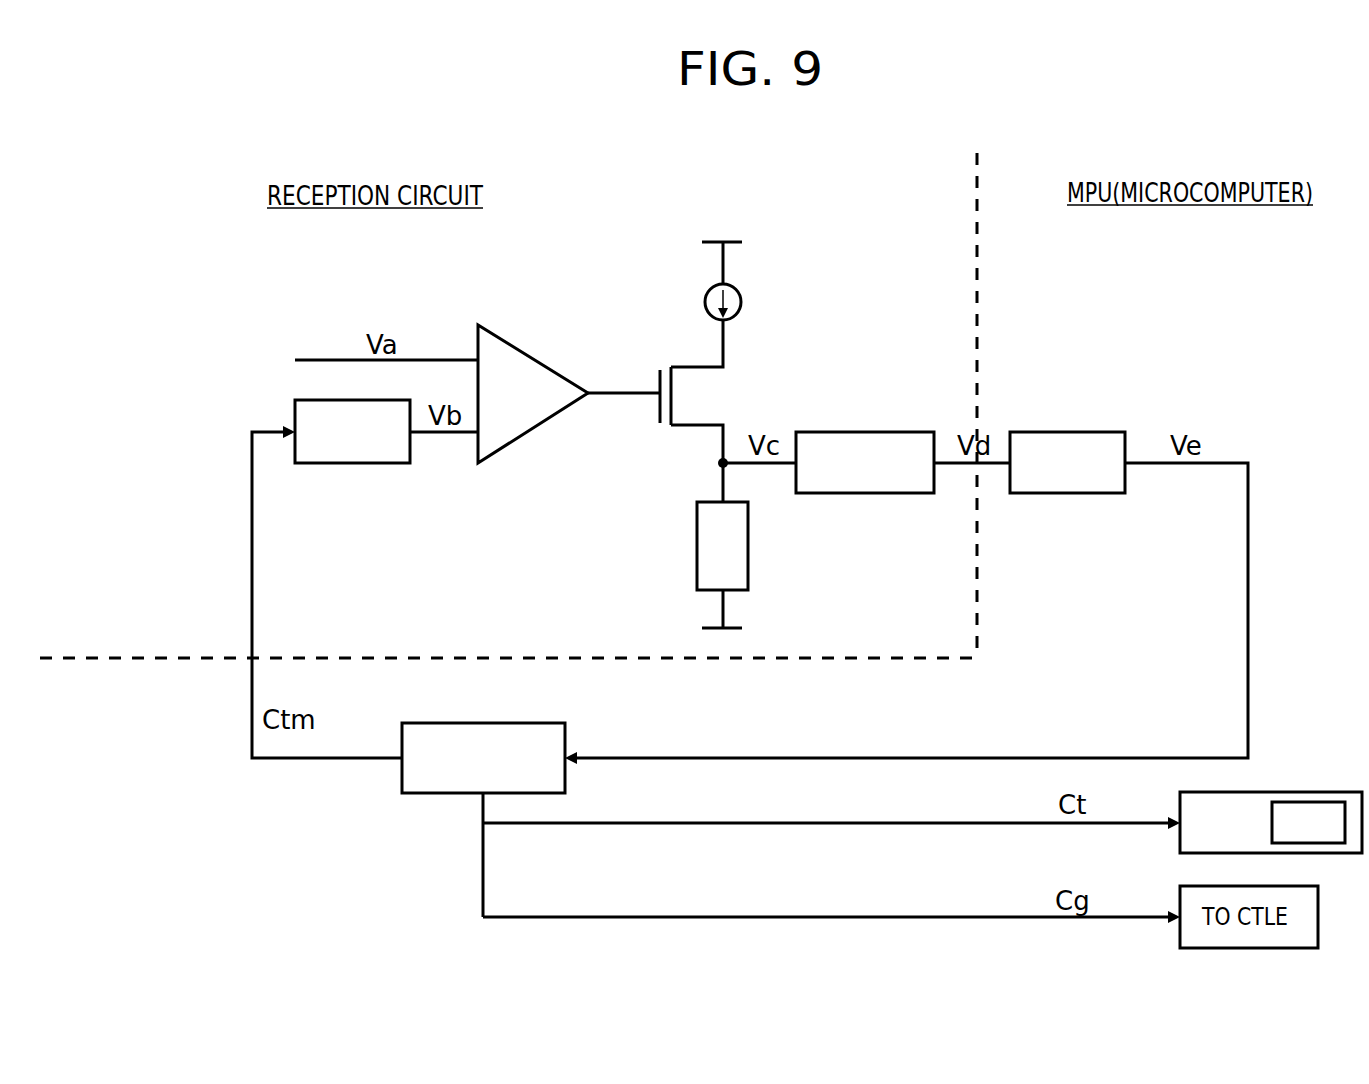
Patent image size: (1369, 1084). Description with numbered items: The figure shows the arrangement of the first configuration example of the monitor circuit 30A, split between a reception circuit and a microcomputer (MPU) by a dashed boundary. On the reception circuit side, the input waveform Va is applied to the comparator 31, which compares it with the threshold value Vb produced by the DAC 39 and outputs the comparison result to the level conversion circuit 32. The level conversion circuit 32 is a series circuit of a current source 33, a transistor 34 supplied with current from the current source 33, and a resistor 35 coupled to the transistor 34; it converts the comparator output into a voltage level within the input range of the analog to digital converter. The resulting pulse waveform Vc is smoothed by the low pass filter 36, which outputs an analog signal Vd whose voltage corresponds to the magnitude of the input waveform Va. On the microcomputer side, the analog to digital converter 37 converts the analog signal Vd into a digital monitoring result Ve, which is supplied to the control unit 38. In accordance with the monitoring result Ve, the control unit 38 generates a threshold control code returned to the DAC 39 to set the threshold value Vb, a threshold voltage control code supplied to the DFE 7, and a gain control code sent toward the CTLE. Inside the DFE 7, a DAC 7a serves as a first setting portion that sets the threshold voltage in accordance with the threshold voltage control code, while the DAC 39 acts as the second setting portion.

The monitor circuit 30A is at (146, 272).
The comparator 31 is at (540, 355).
The level conversion circuit 32 is at (760, 262).
The current source 33 is at (704, 298).
The transistor 34 is at (658, 375).
The resistor 35 is at (697, 548).
The low pass filter 36 is at (878, 432).
The analog to digital converter 37 is at (1070, 432).
The control unit 38 is at (500, 723).
The digital to analog converter 39 is at (355, 400).
The DFE 7 is at (1271, 798).
The DAC 7a is at (1318, 802).